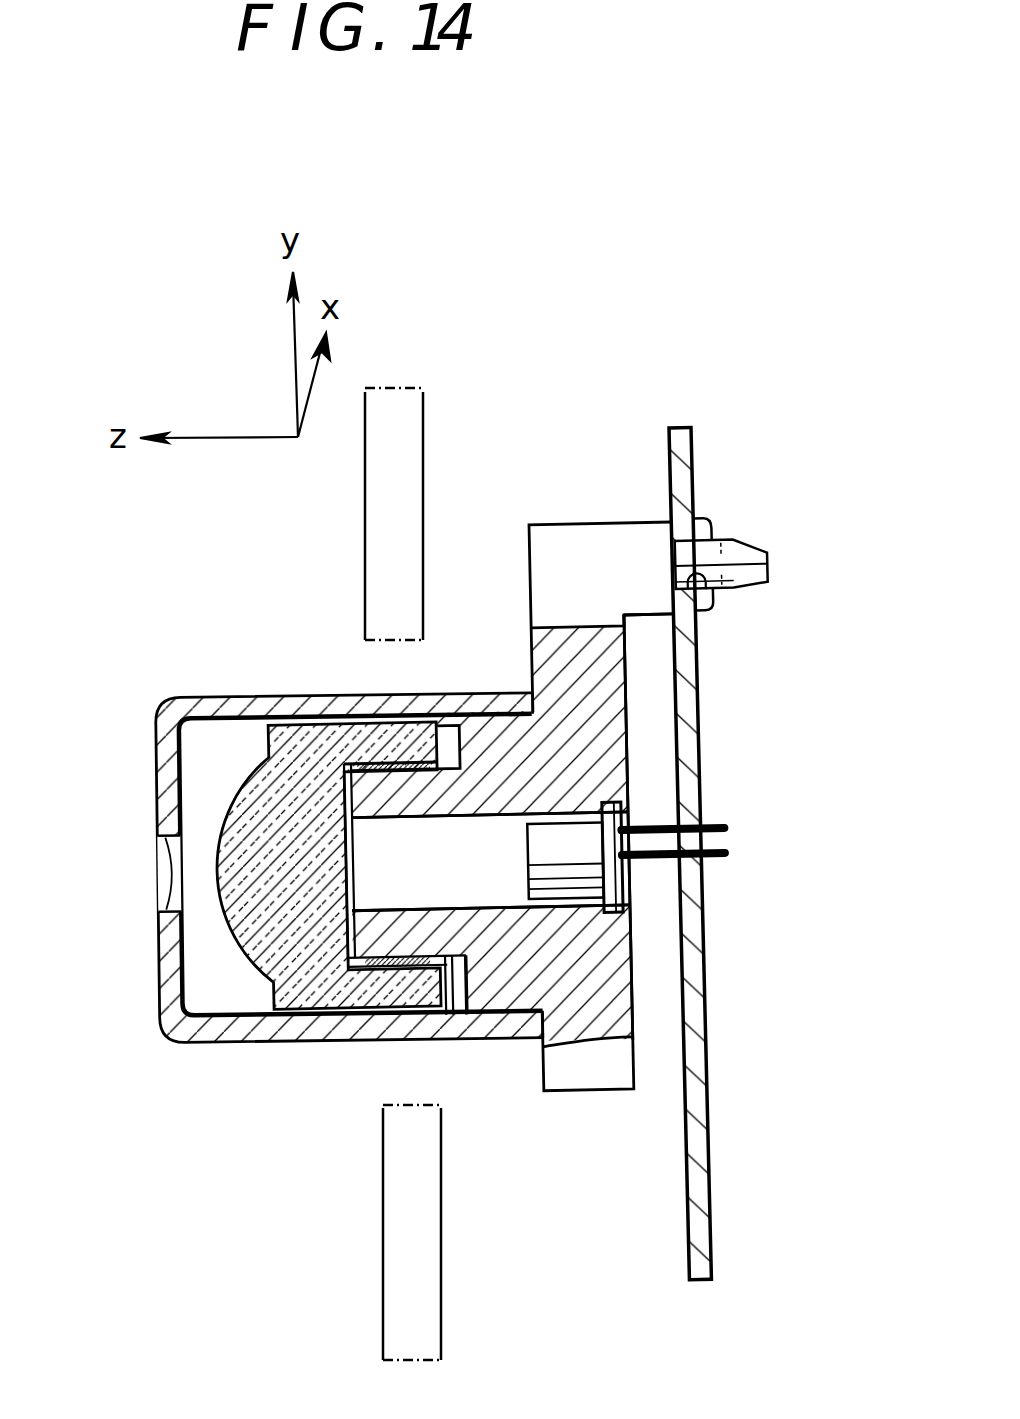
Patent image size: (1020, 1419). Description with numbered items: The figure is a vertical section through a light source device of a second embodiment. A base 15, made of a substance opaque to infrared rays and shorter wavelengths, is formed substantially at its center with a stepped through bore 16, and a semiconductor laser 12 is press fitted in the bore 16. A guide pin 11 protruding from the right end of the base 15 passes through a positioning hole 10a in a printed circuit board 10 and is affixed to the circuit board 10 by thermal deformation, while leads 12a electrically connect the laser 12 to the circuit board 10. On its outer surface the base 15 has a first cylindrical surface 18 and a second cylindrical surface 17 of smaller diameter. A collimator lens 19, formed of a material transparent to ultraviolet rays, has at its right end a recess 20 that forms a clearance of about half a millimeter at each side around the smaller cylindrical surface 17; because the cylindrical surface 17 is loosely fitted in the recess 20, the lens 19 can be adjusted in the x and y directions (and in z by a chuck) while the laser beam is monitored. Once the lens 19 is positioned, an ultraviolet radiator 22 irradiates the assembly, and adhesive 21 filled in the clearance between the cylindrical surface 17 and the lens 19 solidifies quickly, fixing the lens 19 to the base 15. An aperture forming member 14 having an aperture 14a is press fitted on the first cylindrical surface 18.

The printed circuit board 10 is at (710, 1121).
The positioning hole 10a is at (712, 593).
The guide pin 11 is at (740, 543).
The semiconductor laser 12 is at (608, 876).
The leads 12a is at (726, 840).
The aperture forming member 14 is at (303, 884).
The aperture 14a is at (160, 856).
The base 15 is at (632, 731).
The stepped through bore 16 is at (482, 817).
The second cylindrical surface 17 is at (447, 1020).
The first cylindrical surface 18 is at (508, 1025).
The collimator lens 19 is at (230, 803).
The recess 20 is at (372, 764).
The adhesive 21 is at (373, 972).
The ultraviolet radiator 22 is at (428, 494).